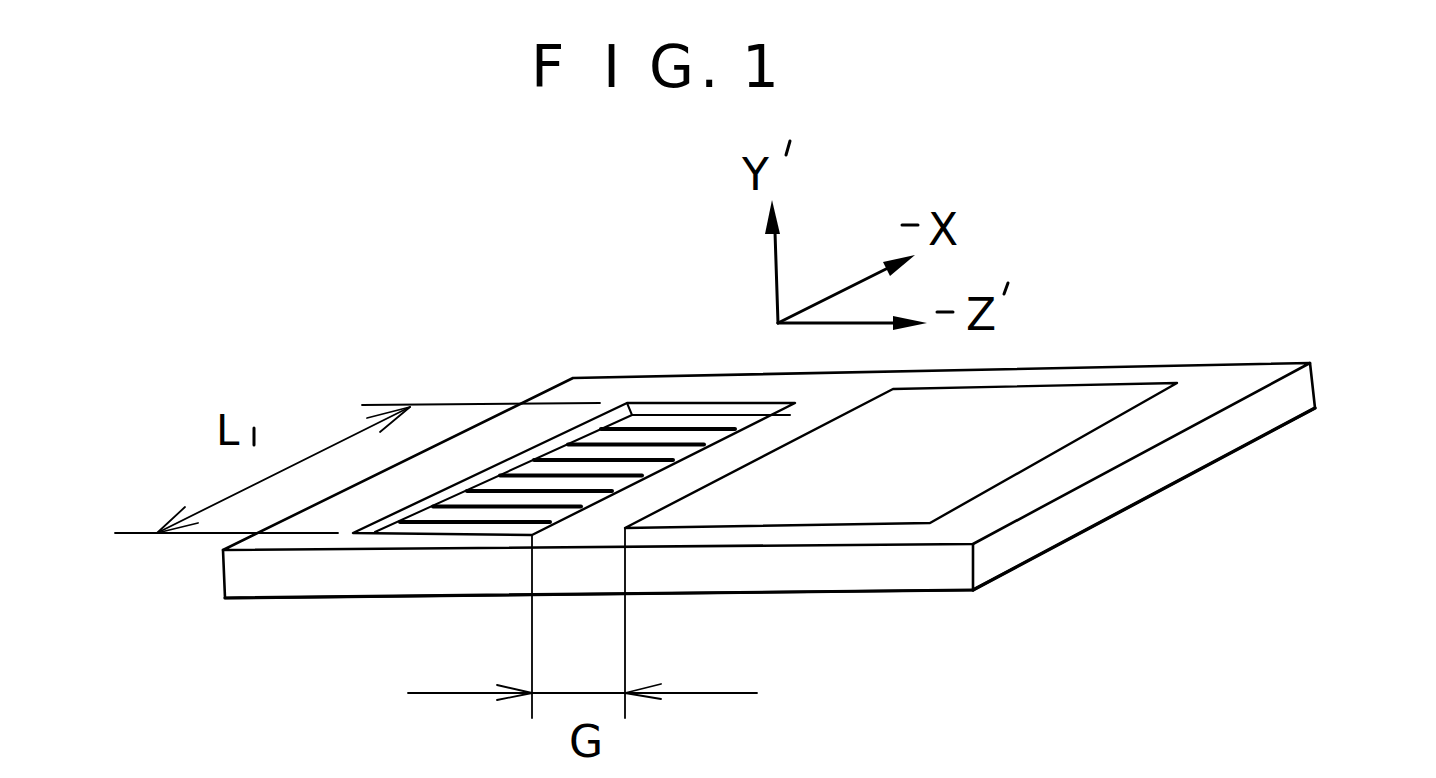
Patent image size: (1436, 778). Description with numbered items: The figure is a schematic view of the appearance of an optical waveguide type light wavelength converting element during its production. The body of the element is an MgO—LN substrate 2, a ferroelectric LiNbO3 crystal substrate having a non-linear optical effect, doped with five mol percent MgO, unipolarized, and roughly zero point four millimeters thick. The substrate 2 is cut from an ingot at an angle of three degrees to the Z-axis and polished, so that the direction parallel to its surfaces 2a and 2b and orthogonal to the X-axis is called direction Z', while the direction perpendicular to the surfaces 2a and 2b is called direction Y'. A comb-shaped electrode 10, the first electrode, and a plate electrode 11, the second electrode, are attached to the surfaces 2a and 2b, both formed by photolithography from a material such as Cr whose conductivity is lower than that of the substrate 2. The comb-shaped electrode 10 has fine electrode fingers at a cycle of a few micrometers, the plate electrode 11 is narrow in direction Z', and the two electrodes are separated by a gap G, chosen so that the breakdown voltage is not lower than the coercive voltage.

The MgO—LN substrate 2 is at (825, 409).
The surface of the MgO—LN substrate 2a is at (1210, 383).
The surface of the MgO—LN substrate 2b is at (1195, 472).
The comb-shaped electrode 10 is at (537, 463).
The plate electrode 11 is at (1003, 410).